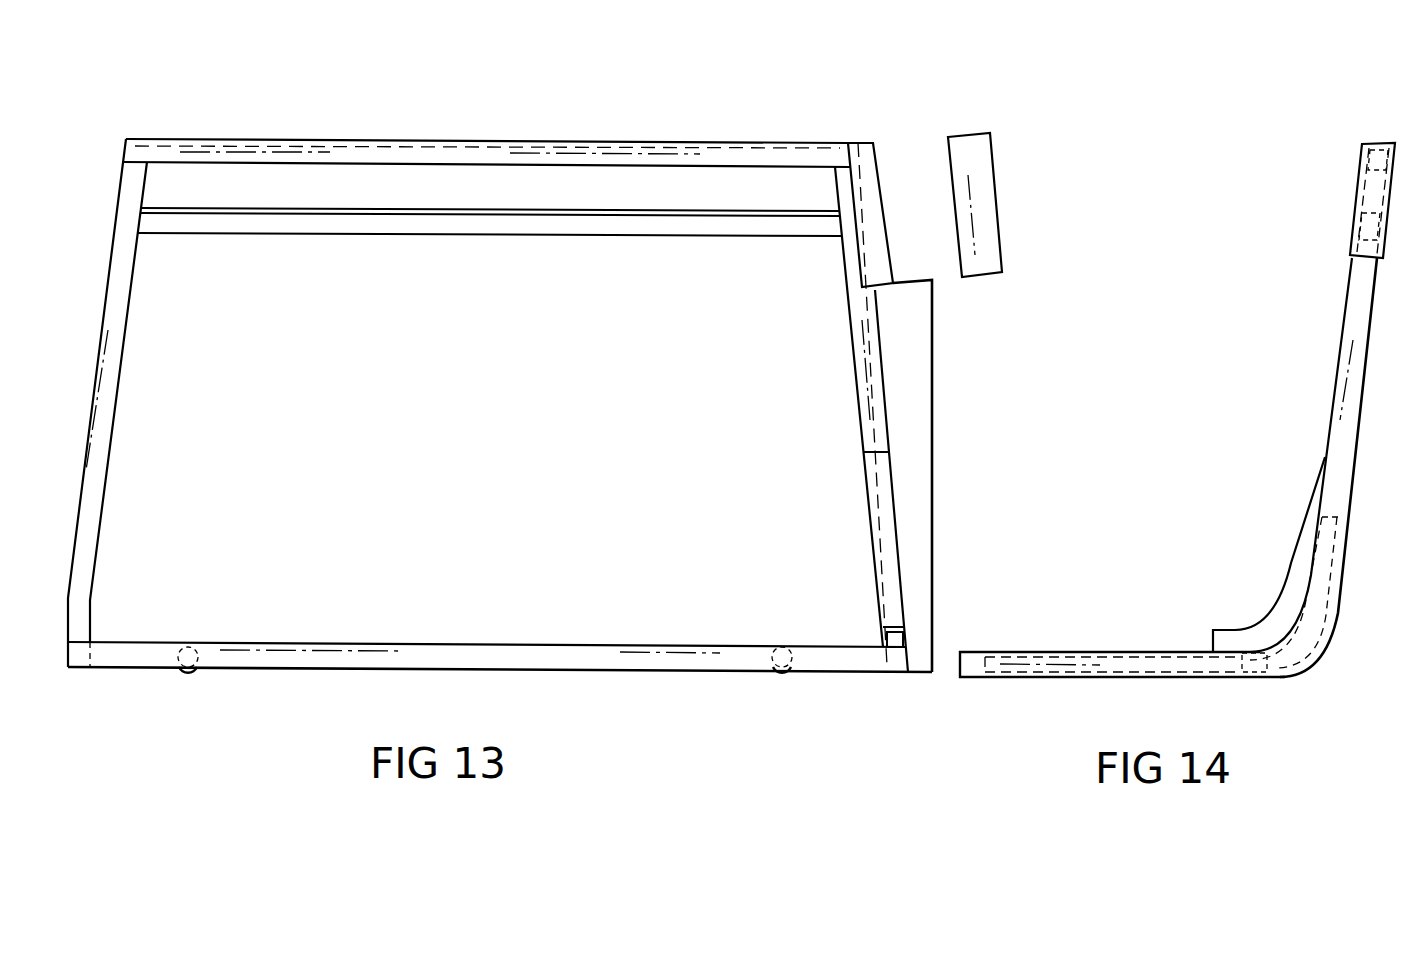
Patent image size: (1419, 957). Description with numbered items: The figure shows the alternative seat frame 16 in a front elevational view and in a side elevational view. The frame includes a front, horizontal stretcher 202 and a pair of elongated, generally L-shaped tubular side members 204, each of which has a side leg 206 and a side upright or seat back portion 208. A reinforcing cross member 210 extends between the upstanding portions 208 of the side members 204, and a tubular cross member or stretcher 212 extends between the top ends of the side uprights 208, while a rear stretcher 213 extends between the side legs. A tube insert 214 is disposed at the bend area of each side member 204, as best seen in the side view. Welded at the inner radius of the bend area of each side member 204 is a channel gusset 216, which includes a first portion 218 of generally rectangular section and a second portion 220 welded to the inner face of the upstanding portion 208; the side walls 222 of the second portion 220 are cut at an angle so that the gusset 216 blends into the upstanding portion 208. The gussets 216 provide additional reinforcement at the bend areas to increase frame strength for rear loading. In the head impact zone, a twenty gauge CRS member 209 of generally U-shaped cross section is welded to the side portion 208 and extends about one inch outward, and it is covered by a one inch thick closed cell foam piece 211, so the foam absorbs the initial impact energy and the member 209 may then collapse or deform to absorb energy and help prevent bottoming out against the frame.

In FIG. 13, the alternative seat frame 16 is at (695, 136).
In FIG. 13, the front horizontal stretcher 202 is at (455, 641).
In FIG. 13, the side tubular member 204 is at (882, 358).
In FIG. 14, the side tubular member 204 is at (1105, 640).
In FIG. 14, the side leg 206 is at (1058, 650).
In FIG. 13, the side upright 208 is at (124, 248).
In FIG. 14, the side upright 208 is at (1348, 287).
In FIG. 13, the CRS member 209 is at (897, 188).
In FIG. 13, the reinforcing cross member 210 is at (374, 238).
In FIG. 13, the closed cell foam piece 211 is at (995, 200).
In FIG. 13, the tubular cross member 212 is at (440, 131).
In FIG. 14, the tubular cross member 212 is at (1362, 165).
In FIG. 13, the rear stretcher 213 is at (925, 458).
In FIG. 14, the tube insert 214 is at (1313, 637).
In FIG. 13, the channel gusset 216 is at (900, 553).
In FIG. 14, the channel gusset 216 is at (1275, 564).
In FIG. 14, the first portion 218 is at (1230, 637).
In FIG. 14, the second portion 220 is at (1318, 474).
In FIG. 14, the side wall 222 is at (1313, 512).